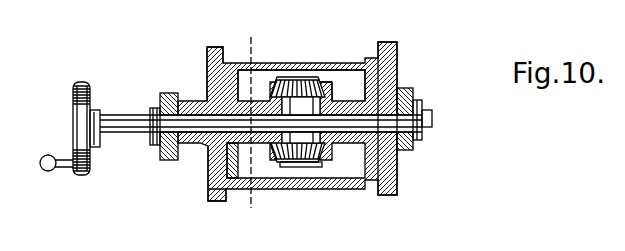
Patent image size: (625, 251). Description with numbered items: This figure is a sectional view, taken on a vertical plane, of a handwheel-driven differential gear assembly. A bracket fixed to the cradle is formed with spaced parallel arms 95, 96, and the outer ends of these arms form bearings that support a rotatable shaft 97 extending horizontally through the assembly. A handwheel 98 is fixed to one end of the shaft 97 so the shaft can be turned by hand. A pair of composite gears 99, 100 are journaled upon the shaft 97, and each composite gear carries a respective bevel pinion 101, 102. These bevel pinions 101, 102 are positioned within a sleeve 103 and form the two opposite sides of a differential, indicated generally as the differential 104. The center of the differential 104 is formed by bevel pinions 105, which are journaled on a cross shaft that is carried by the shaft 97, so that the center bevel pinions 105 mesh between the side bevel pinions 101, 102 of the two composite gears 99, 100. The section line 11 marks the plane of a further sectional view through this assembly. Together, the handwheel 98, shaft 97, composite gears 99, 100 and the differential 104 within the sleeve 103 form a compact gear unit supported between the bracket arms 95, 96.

The section line 11- 11 is at (251, 37).
The arm 95 is at (167, 93).
The arm 96 is at (405, 90).
The rotatable shaft 97 is at (138, 128).
The handwheel 98 is at (73, 97).
The composite gear 99 is at (208, 51).
The composite gear 100 is at (393, 52).
The bevel pinion 101 is at (262, 93).
The bevel pinion 102 is at (341, 89).
The sleeve 103 is at (353, 188).
The differential 104 is at (266, 164).
The bevel pinions 105 is at (297, 77).